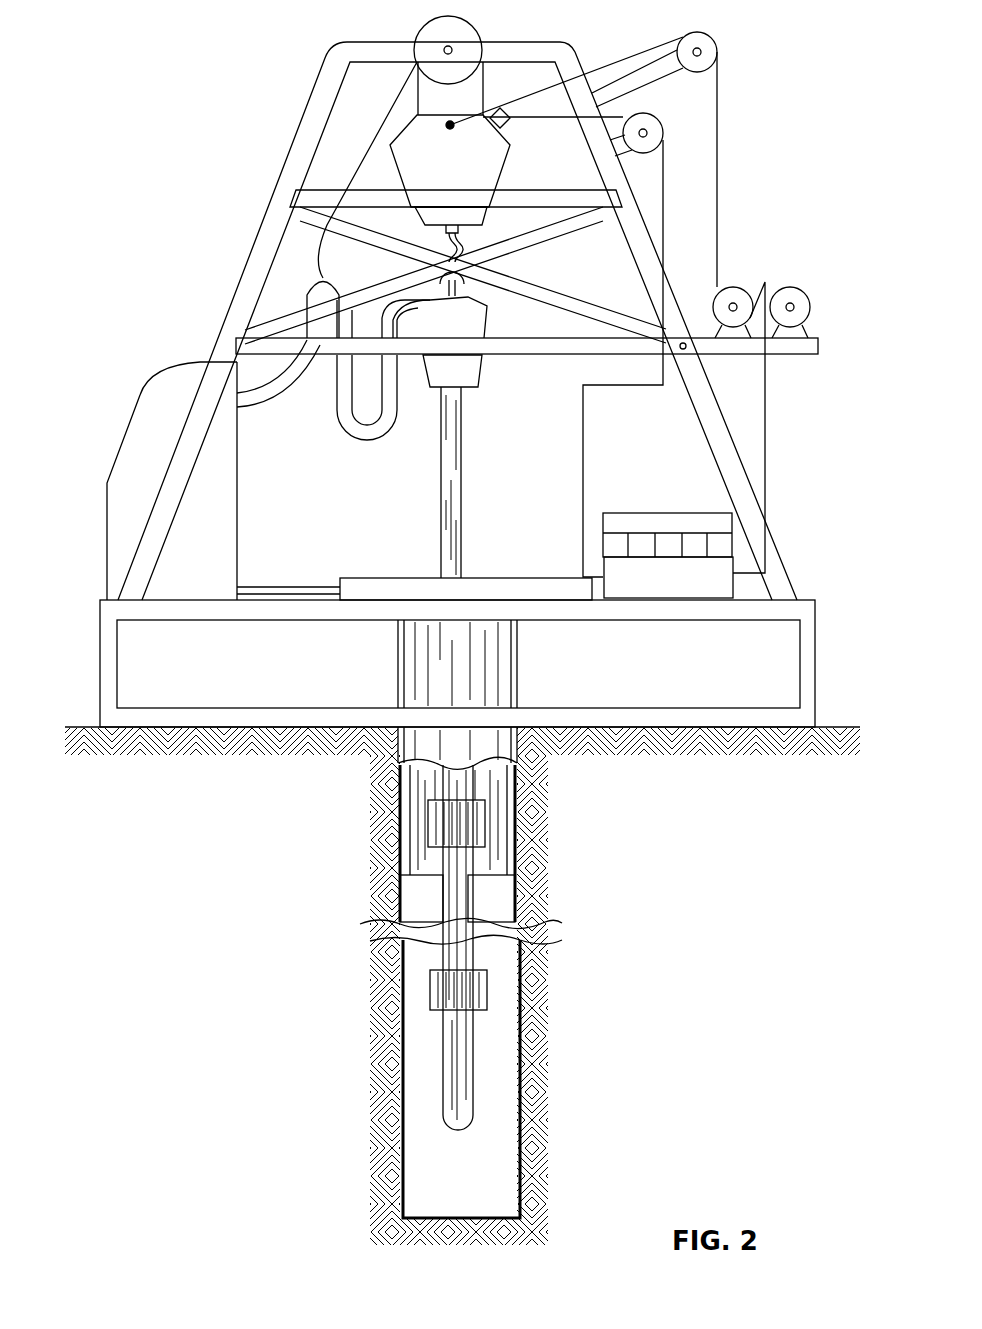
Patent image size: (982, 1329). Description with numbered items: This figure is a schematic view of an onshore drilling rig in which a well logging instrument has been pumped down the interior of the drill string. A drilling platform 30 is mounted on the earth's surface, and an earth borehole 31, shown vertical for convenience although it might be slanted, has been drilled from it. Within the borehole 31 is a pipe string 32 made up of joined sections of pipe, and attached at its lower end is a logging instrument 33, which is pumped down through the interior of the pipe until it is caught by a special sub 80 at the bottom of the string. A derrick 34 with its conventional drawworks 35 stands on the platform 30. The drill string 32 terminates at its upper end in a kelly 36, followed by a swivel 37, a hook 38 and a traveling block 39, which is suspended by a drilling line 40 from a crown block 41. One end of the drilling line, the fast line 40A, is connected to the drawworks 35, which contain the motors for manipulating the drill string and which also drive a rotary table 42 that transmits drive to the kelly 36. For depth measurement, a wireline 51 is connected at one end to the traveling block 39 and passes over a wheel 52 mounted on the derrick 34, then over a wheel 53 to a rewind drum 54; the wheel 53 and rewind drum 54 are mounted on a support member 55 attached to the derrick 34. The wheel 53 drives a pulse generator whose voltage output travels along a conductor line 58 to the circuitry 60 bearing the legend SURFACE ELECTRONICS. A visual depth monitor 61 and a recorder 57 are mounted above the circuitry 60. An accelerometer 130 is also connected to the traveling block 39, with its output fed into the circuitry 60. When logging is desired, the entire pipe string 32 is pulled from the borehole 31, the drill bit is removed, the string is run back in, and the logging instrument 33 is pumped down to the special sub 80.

The drilling platform 30 is at (797, 600).
The earth borehole 31 is at (518, 910).
The pipe string 32 is at (525, 921).
The logging instrument 33 is at (475, 1065).
The derrick 34 is at (287, 160).
The drawworks 35 is at (123, 440).
The kelly 36 is at (463, 455).
The swivel 37 is at (489, 336).
The hook 38 is at (468, 250).
The traveling block 39 is at (403, 178).
The drilling line 40 is at (417, 80).
The fast line 40A is at (370, 142).
The crown block 41 is at (477, 36).
The rotary table 42 is at (400, 578).
The wireline 51 is at (615, 63).
The wheel 52 is at (718, 72).
The wheel 53 is at (727, 290).
The rewind drum 54 is at (807, 300).
The support member 55 is at (820, 352).
The recorder 57 is at (668, 513).
The conductor line 58 is at (767, 465).
The surface electronics circuitry 60 is at (600, 583).
The visual depth monitor 61 is at (603, 545).
The special sub 80 is at (488, 1000).
The accelerometer 130 is at (509, 128).